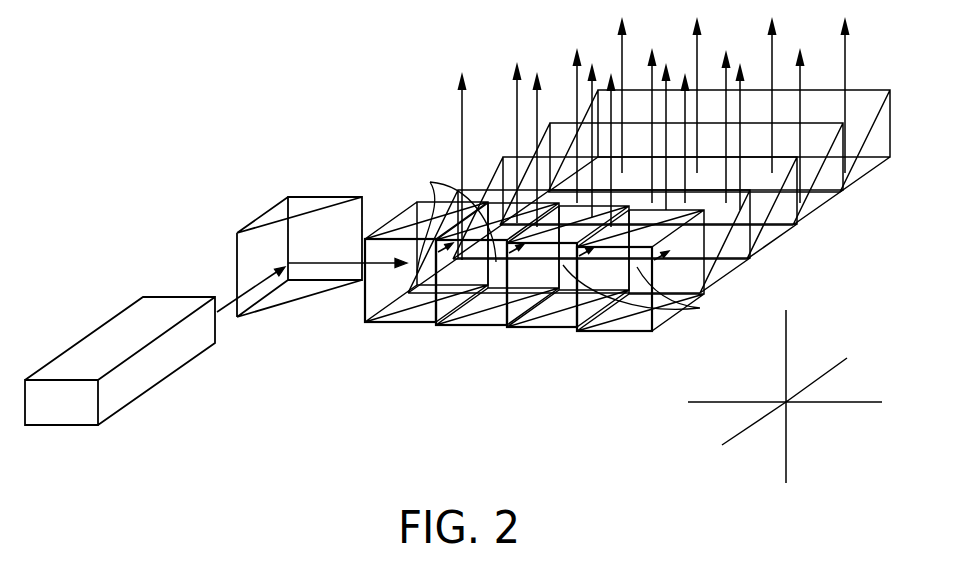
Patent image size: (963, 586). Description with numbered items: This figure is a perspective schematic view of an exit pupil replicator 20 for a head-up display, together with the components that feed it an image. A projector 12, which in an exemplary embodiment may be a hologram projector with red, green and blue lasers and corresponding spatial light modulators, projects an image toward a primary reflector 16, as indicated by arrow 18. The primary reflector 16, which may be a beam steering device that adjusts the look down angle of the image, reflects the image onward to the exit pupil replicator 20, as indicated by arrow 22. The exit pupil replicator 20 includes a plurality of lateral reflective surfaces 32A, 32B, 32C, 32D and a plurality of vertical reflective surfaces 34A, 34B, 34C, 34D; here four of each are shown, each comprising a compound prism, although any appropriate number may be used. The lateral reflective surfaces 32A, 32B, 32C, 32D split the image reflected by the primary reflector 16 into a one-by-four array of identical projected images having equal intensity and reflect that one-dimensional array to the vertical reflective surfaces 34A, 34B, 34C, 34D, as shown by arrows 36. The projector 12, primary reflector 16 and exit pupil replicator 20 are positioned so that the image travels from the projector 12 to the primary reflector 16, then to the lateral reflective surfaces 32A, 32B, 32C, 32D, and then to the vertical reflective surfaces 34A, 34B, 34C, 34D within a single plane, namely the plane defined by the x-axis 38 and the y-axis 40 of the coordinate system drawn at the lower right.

The projector 12 is at (128, 318).
The primary reflector 16 is at (280, 215).
The arrow 18 is at (230, 303).
The exit pupil replicator 20 is at (635, 215).
The arrow 22 is at (333, 265).
The lateral reflective surface 32A is at (400, 323).
The lateral reflective surface 32B is at (453, 326).
The lateral reflective surface 32C is at (550, 328).
The lateral reflective surface 32D is at (613, 332).
The vertical reflective surface 34A is at (735, 272).
The vertical reflective surface 34B is at (780, 240).
The vertical reflective surface 34C is at (823, 207).
The vertical reflective surface 34D is at (873, 173).
The arrows 36 is at (430, 182).
The x-axis 38 is at (775, 408).
The y-axis 40 is at (735, 437).